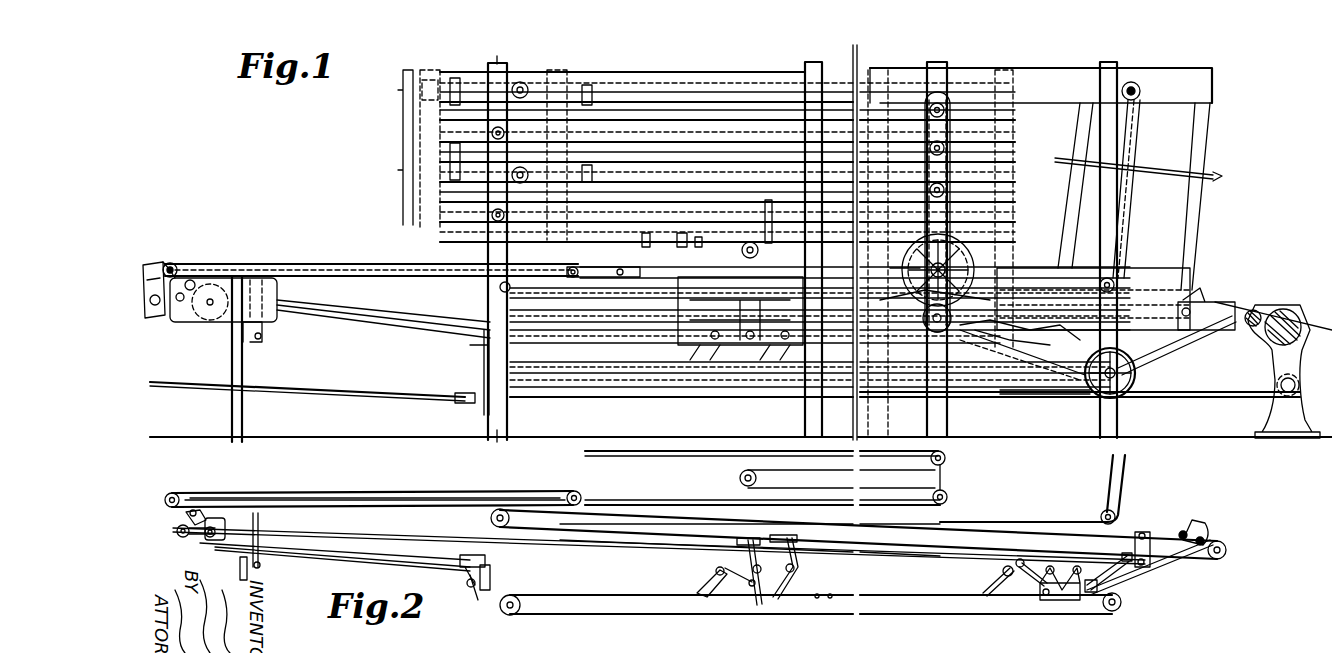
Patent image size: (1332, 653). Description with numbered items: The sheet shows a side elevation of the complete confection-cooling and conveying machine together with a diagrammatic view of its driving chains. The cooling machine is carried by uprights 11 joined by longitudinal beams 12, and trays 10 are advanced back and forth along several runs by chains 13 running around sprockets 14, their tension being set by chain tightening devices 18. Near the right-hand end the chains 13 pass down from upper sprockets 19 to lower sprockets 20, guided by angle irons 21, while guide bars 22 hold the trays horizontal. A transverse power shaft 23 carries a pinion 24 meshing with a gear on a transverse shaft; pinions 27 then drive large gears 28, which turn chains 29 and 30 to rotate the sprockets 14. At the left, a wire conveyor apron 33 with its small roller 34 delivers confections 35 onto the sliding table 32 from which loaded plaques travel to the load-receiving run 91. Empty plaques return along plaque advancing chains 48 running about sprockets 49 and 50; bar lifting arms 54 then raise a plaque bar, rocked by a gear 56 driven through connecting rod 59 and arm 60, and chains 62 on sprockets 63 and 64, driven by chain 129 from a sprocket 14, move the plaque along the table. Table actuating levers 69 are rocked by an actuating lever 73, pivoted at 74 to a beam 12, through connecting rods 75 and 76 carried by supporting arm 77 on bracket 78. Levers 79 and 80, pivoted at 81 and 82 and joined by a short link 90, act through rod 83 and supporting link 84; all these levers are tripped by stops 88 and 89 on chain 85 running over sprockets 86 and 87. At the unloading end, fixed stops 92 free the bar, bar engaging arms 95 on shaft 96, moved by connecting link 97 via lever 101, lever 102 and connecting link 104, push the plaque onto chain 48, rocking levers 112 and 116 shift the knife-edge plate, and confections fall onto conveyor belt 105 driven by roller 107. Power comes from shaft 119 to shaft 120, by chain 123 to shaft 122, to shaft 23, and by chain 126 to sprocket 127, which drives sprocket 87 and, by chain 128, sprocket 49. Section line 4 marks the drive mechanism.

In FIG. 1, the section line 4 is at (504, 51).
In FIG. 1, the tray 10 is at (1210, 176).
In FIG. 1, the upright 11 is at (508, 68).
In FIG. 1, the beam 12 is at (472, 72).
In FIG. 1, the chain 13 is at (676, 80).
In FIG. 2, the chain 13 is at (703, 452).
In FIG. 1, the sprocket 14 is at (524, 86).
In FIG. 2, the sprocket 14 is at (496, 519).
In FIG. 1, the chain tightening device 18 is at (420, 70).
In FIG. 1, the upper sprocket 19 is at (1140, 85).
In FIG. 1, the sprocket 20 is at (1105, 278).
In FIG. 2, the sprocket 20 is at (1104, 511).
In FIG. 1, the angle iron 21 is at (1130, 160).
In FIG. 1, the guide bar 22 is at (1068, 200).
In FIG. 1, the power shaft 23 is at (975, 400).
In FIG. 1, the pinion 24 is at (995, 325).
In FIG. 1, the pinion 27 is at (905, 295).
In FIG. 1, the large gear 28 is at (1012, 285).
In FIG. 1, the chain 29 is at (962, 262).
In FIG. 1, the chain 30 is at (950, 152).
In FIG. 1, the table 32 is at (274, 264).
In FIG. 2, the table 32 is at (338, 475).
In FIG. 1, the wire conveyor apron 33 is at (165, 262).
In FIG. 1, the roller 34 is at (174, 266).
In FIG. 1, the confection 35 is at (148, 265).
In FIG. 2, the plaque advancing chain 48 is at (630, 561).
In FIG. 2, the sprocket 49 is at (1228, 552).
In FIG. 2, the sprocket 50 is at (178, 534).
In FIG. 2, the bar lifting arm 54 is at (197, 511).
In FIG. 2, the gear 56 is at (224, 526).
In FIG. 2, the connecting rod 59 is at (226, 551).
In FIG. 2, the arm 60 is at (203, 536).
In FIG. 1, the chain 62 is at (386, 264).
In FIG. 2, the chain 62 is at (398, 494).
In FIG. 2, the sprocket 63 is at (172, 494).
In FIG. 1, the sprocket 64 is at (620, 268).
In FIG. 2, the sprocket 64 is at (574, 492).
In FIG. 1, the table actuating lever 69 is at (264, 322).
In FIG. 2, the table actuating lever 69 is at (258, 521).
In FIG. 2, the actuating lever 73 is at (795, 580).
In FIG. 2, the pivot 74 is at (798, 566).
In FIG. 2, the connecting rod 75 is at (298, 555).
In FIG. 2, the connecting rod 76 is at (573, 530).
In FIG. 2, the supporting arm 77 is at (492, 565).
In FIG. 2, the supporting bracket 78 is at (470, 585).
In FIG. 2, the actuating lever 79 is at (758, 606).
In FIG. 2, the actuating lever 80 is at (705, 598).
In FIG. 2, the pivot 81 is at (761, 570).
In FIG. 2, the pivot 82 is at (718, 569).
In FIG. 2, the rod 83 is at (661, 546).
In FIG. 2, the supporting link 84 is at (458, 560).
In FIG. 1, the chain 85 is at (726, 384).
In FIG. 2, the chain 85 is at (589, 615).
In FIG. 2, the sprocket 86 is at (514, 613).
In FIG. 2, the sprocket 87 is at (1110, 611).
In FIG. 2, the stop 88 is at (816, 598).
In FIG. 2, the stop 89 is at (831, 598).
In FIG. 2, the link 90 is at (742, 579).
In FIG. 1, the load-receiving run 91 is at (540, 268).
In FIG. 1, the fixed stop 92 is at (1202, 298).
In FIG. 2, the bar engaging arm 95 is at (1195, 518).
In FIG. 2, the shaft 96 is at (1183, 535).
In FIG. 2, the connecting link 97 is at (1130, 578).
In FIG. 2, the actuating lever 101 is at (1042, 594).
In FIG. 2, the lever 102 is at (990, 576).
In FIG. 2, the connecting link 104 is at (1024, 571).
In FIG. 1, the conveyor belt 105 is at (1263, 300).
In FIG. 1, the driving roller 107 is at (1284, 320).
In FIG. 2, the rocking lever 112 is at (1133, 545).
In FIG. 2, the rocking lever 116 is at (1070, 560).
In FIG. 1, the power driven shaft 119 is at (309, 392).
In FIG. 1, the shaft 120 is at (643, 398).
In FIG. 1, the shaft 122 is at (630, 345).
In FIG. 1, the chain 123 is at (484, 362).
In FIG. 1, the chain 126 is at (1065, 398).
In FIG. 1, the sprocket 127 is at (1136, 375).
In FIG. 1, the chain 128 is at (1182, 340).
In FIG. 1, the chain 129 is at (571, 268).